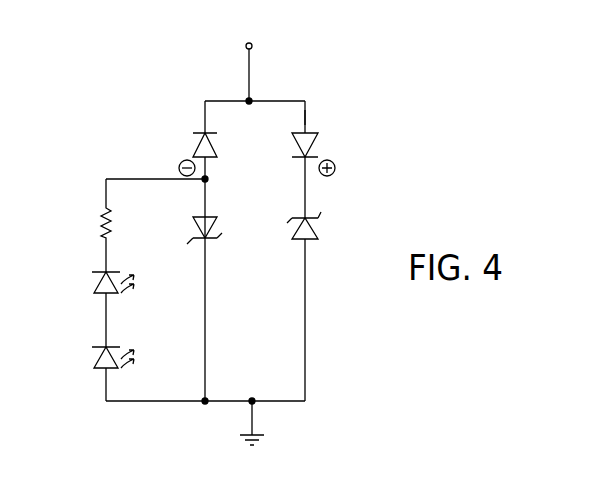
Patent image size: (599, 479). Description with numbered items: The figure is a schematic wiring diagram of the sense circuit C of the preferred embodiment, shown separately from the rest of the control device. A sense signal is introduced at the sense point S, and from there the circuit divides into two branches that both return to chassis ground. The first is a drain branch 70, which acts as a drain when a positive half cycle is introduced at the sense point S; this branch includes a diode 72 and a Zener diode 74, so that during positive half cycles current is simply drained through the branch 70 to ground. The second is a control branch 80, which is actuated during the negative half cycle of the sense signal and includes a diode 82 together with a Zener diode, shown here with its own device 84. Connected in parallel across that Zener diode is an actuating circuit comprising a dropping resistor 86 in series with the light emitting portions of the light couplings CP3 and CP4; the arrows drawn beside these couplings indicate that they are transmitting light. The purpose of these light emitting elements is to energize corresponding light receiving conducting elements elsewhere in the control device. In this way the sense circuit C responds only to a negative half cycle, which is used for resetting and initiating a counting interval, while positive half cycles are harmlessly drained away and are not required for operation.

The drain branch 70 is at (320, 122).
The diode 72 is at (314, 141).
The Zener diode 74 is at (311, 230).
The control branch 80 is at (174, 159).
The diode 82 is at (208, 148).
The zener diode 84 is at (193, 228).
The dropping resistor 86 is at (100, 220).
The sense point S is at (256, 65).
The sense circuit C is at (369, 157).
The light coupling CP3 is at (123, 309).
The light coupling CP4 is at (123, 374).